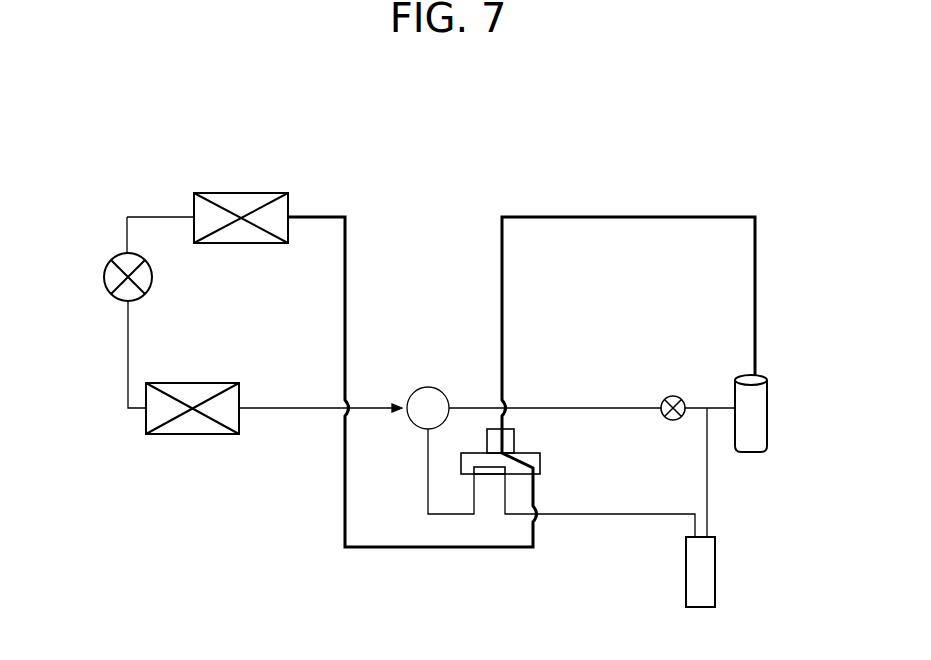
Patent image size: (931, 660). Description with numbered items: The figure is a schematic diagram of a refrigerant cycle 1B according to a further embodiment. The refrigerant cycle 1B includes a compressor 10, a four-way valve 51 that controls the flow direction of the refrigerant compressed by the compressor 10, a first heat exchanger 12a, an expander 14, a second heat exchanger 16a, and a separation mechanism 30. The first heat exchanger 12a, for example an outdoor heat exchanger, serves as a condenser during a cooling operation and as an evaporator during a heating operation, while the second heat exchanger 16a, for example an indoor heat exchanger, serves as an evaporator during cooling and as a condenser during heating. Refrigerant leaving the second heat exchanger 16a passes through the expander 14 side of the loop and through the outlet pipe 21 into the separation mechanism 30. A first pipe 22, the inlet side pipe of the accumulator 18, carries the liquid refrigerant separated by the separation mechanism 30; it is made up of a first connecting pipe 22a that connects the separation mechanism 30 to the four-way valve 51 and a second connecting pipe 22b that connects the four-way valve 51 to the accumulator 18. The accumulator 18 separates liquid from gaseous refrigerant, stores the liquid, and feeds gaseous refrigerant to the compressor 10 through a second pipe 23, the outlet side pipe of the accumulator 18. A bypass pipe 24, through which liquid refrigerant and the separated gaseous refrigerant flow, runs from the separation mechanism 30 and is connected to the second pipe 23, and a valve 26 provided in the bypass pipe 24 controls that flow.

The refrigerant cycle 1B is at (424, 186).
The compressor 10 is at (768, 418).
The first heat exchanger 12a is at (240, 193).
The expander 14 is at (104, 277).
The second heat exchanger 16a is at (191, 435).
The accumulator 18 is at (700, 608).
The outlet pipe 21 is at (288, 410).
The first pipe 22 is at (570, 597).
The first connecting pipe 22a is at (457, 516).
The second connecting pipe 22b is at (569, 516).
The second pipe 23 is at (708, 485).
The bypass pipe 24 is at (573, 400).
The valve 26 is at (672, 393).
The separation mechanism 30 is at (429, 385).
The four-way valve 51 is at (541, 456).